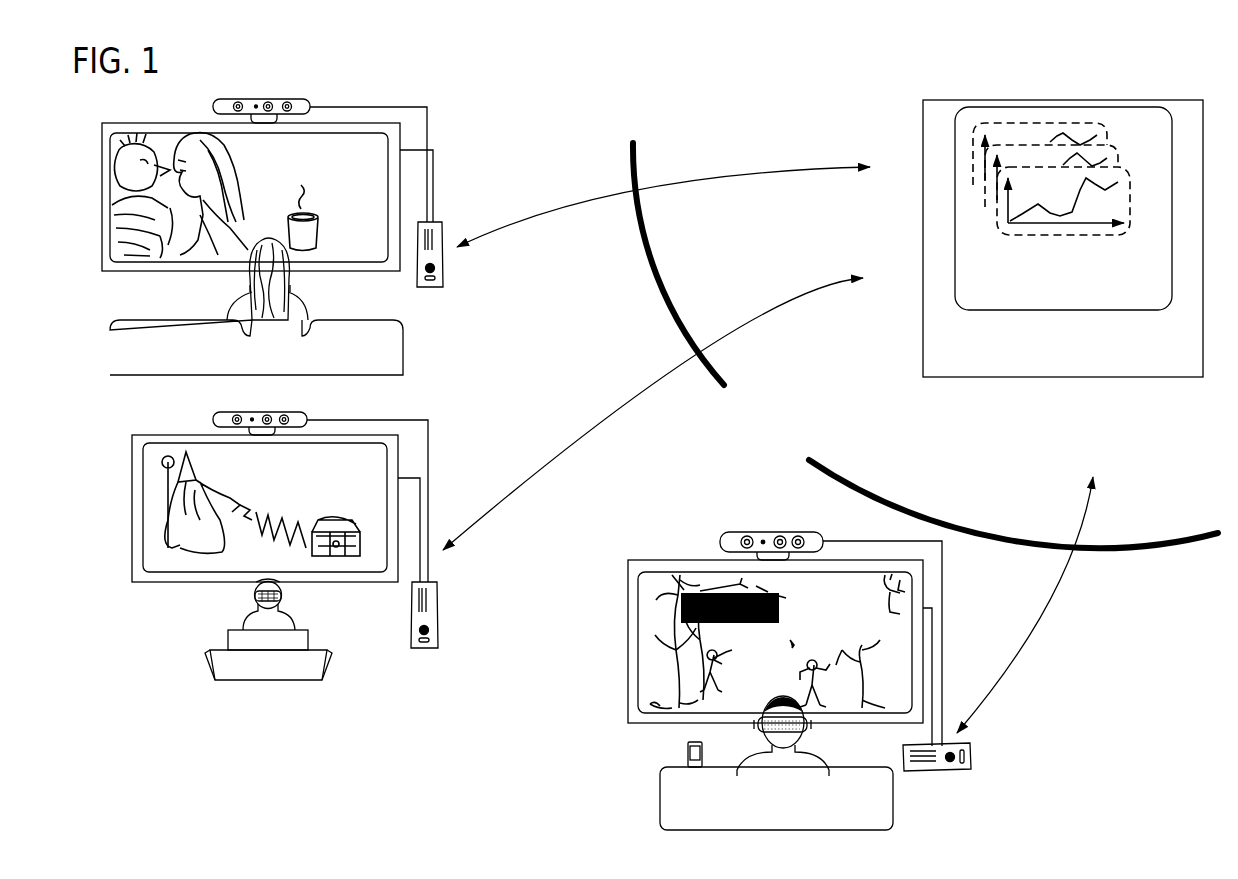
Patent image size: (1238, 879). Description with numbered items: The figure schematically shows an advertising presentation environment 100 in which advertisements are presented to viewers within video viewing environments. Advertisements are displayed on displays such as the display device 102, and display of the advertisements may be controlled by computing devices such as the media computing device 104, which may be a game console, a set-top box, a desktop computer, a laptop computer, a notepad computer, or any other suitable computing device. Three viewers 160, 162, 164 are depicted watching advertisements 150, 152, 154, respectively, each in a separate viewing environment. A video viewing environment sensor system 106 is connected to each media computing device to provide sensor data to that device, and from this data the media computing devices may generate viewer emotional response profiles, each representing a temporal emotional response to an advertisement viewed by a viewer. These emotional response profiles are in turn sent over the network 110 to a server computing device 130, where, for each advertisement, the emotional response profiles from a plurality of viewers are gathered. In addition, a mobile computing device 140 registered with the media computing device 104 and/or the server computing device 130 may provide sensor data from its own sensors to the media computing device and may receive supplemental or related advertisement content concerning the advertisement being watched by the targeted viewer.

The advertising presentation environment 100 is at (391, 76).
The display device 102 is at (101, 172).
The media computing device 104 is at (449, 220).
The video viewing environment sensor system 106 is at (262, 97).
The network 110 is at (790, 411).
The server computing device 130 is at (1071, 100).
The mobile computing device 140 is at (688, 742).
The advertisement 150 is at (131, 108).
The advertisement 152 is at (120, 493).
The advertisement 154 is at (617, 594).
The viewer 160 is at (210, 288).
The viewer 162 is at (198, 597).
The viewer 164 is at (607, 737).